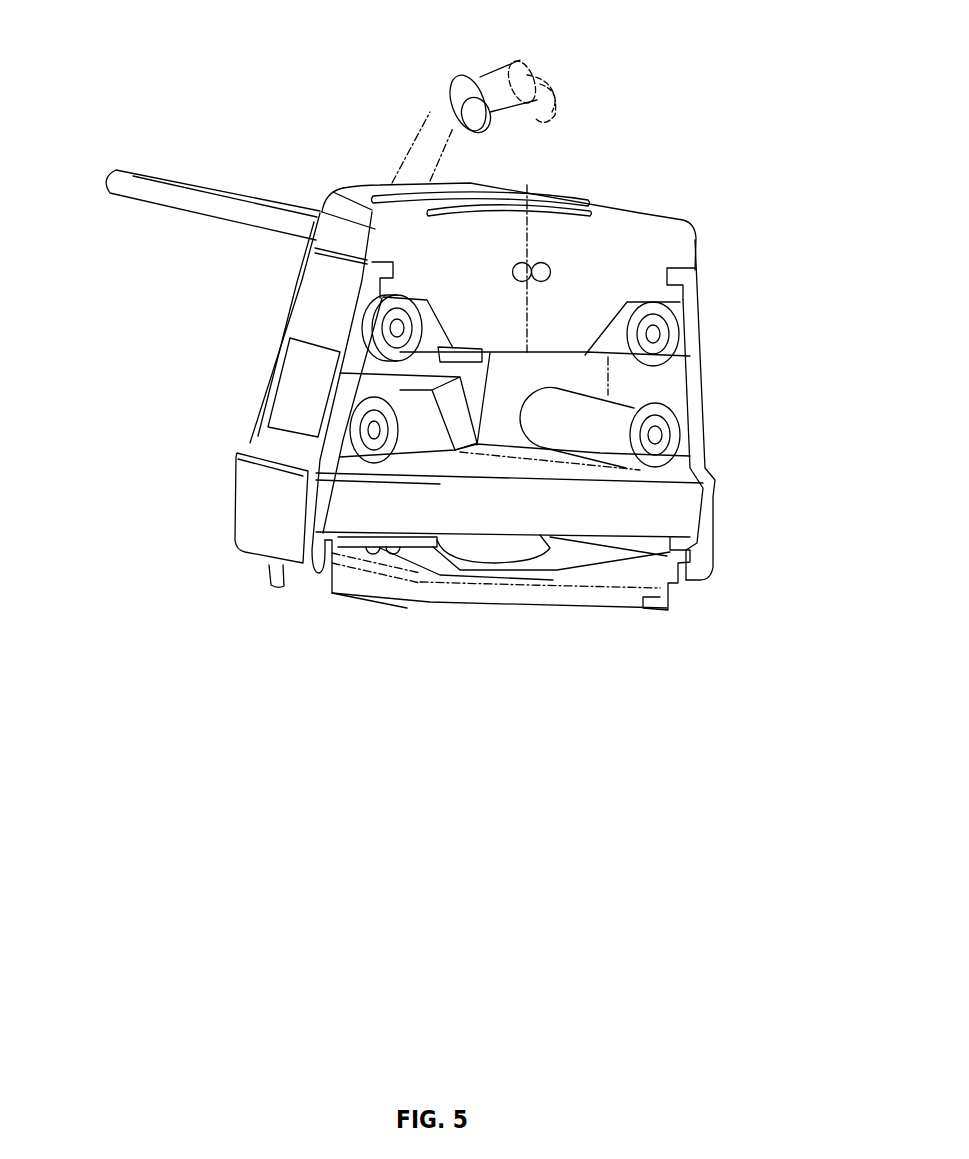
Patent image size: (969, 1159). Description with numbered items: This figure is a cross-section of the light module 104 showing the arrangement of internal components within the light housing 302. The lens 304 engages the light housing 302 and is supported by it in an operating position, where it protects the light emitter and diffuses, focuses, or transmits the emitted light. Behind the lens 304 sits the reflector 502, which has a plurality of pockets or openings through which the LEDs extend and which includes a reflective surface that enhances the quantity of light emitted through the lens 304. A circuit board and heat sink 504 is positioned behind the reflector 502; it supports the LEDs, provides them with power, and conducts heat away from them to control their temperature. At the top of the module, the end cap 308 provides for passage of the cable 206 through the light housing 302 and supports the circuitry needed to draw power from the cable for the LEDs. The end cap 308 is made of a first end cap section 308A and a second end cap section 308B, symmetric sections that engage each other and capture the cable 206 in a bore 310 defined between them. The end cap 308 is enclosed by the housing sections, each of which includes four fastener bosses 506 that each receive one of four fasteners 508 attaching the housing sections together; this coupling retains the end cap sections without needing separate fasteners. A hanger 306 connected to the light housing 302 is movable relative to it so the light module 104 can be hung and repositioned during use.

The light module 104 is at (697, 115).
The first cable 206 is at (157, 198).
The light housing 302 is at (327, 302).
The lens 304 is at (327, 597).
The hanger 306 is at (445, 123).
The end cap 308 is at (370, 205).
The first end cap section 308A is at (395, 240).
The second end cap section 308B is at (582, 253).
The bore 310 is at (531, 260).
The reflector 502 is at (560, 575).
The circuit board and heat sink 504 is at (650, 517).
The fastener bosses 506 is at (597, 413).
The fasteners 508 is at (655, 443).